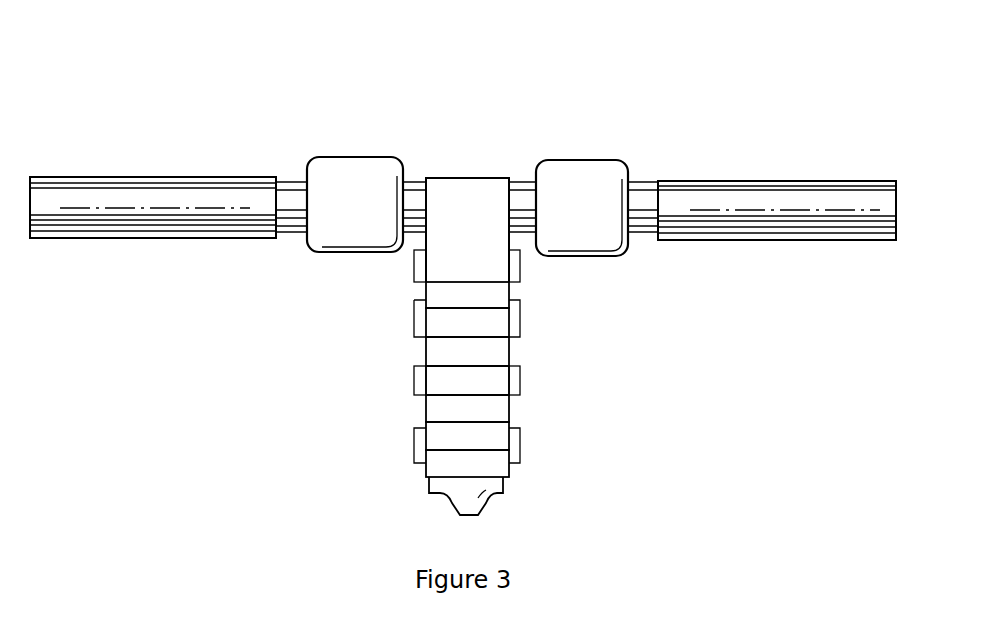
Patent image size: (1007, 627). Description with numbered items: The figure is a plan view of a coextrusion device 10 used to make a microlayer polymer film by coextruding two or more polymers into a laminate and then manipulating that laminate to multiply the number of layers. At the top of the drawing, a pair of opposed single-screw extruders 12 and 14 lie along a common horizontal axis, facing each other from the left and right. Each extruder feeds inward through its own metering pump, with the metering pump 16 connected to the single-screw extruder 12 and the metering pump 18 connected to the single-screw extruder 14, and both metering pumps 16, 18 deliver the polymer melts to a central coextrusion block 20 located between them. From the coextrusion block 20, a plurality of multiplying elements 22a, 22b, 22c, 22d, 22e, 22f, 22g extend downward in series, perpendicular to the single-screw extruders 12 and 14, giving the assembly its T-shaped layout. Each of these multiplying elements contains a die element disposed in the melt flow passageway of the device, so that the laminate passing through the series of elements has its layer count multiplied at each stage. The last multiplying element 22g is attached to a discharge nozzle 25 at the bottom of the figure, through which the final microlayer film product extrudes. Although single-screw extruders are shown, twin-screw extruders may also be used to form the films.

The coextrusion device 10 is at (457, 118).
The single-screw extruder 12 is at (147, 177).
The single-screw extruder 14 is at (755, 181).
The metering pump 16 is at (350, 157).
The metering pump 18 is at (582, 160).
The coextrusion block 20 is at (482, 242).
The multiplying element 22a is at (500, 294).
The multiplying element 22b is at (502, 320).
The multiplying element 22c is at (437, 352).
The multiplying element 22d is at (495, 384).
The multiplying element 22e is at (437, 410).
The multiplying element 22f is at (500, 436).
The multiplying element 22g is at (438, 462).
The discharge nozzle 25 is at (440, 492).